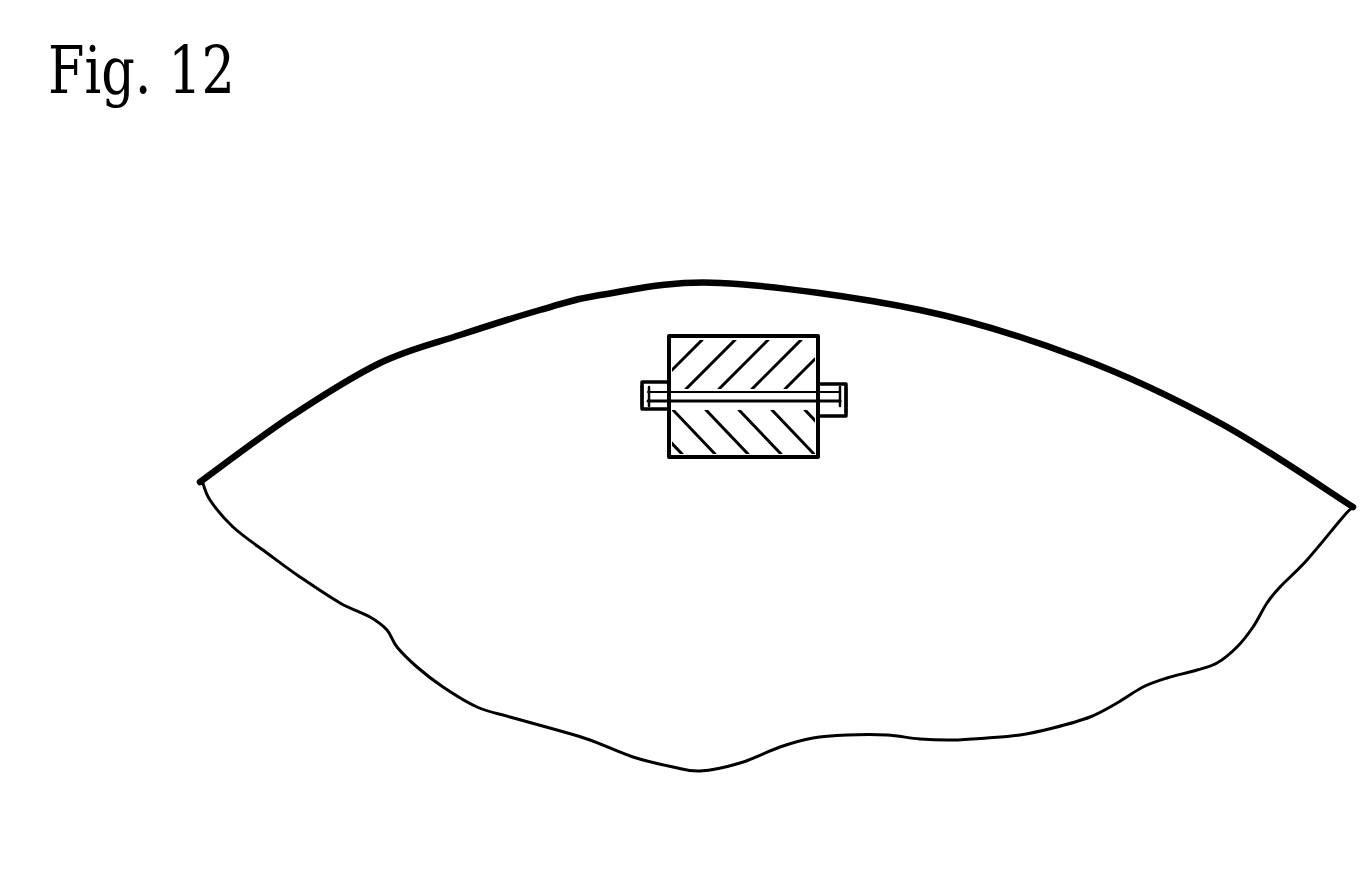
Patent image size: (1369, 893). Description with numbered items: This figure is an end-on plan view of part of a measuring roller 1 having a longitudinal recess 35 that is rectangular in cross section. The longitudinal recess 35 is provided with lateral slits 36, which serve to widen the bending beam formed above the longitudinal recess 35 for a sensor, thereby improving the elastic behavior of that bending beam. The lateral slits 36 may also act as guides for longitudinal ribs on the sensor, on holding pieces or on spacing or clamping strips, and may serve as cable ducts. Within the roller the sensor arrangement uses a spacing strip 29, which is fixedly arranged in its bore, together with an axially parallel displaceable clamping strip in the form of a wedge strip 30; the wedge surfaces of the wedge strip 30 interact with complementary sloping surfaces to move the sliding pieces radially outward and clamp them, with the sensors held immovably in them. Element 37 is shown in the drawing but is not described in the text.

The measuring roller 1 is at (1115, 415).
The spacing strip 29 is at (749, 352).
The wedge strip 30 is at (753, 433).
The longitudinal recess 35 is at (720, 458).
The lateral slits 36 is at (642, 412).
The pin 37 is at (645, 383).